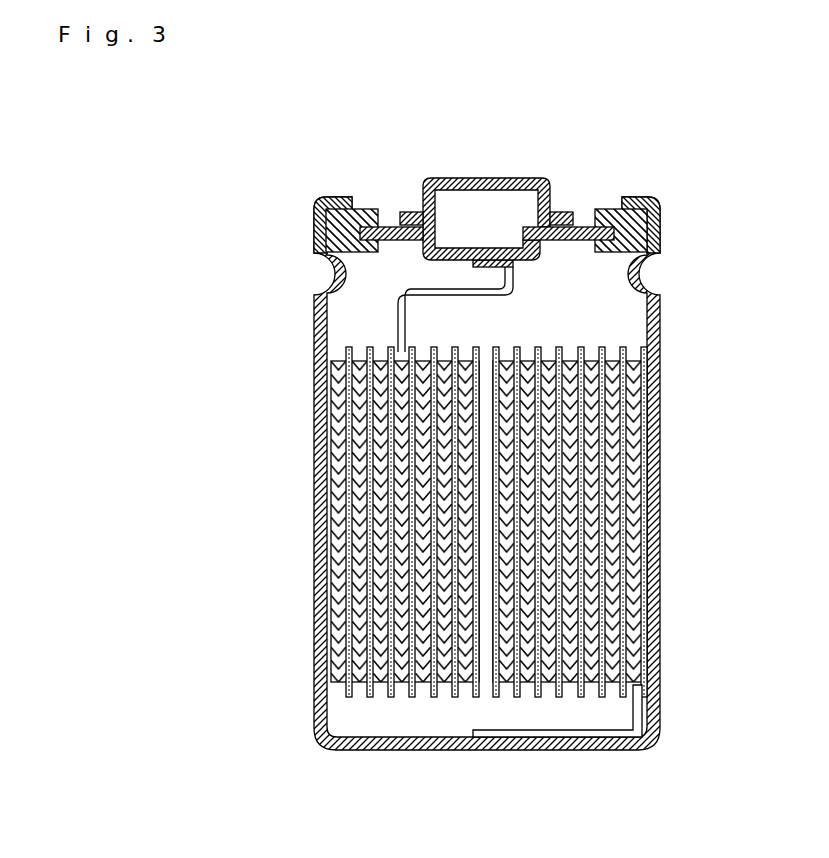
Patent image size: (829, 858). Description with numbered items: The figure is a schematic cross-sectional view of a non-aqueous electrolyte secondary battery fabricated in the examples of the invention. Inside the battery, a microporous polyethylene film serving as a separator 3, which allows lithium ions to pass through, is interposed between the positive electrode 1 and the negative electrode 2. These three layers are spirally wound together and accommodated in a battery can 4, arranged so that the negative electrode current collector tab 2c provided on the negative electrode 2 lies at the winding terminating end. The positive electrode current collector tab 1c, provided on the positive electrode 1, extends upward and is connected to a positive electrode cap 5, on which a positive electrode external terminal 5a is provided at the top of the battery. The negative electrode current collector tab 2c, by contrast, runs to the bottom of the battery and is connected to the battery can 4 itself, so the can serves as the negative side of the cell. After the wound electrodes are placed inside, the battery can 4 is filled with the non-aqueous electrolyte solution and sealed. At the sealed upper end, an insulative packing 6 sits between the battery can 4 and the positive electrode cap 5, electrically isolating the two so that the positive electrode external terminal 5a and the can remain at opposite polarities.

The positive electrode 1 is at (372, 460).
The positive electrode current collector tab 1c is at (398, 318).
The negative electrode 2 is at (335, 697).
The negative electrode current collector tab 2c is at (633, 713).
The separator 3 is at (582, 347).
The battery can 4 is at (660, 400).
The positive electrode cap 5 is at (578, 227).
The positive electrode external terminal 5a is at (487, 178).
The insulative packing 6 is at (362, 209).